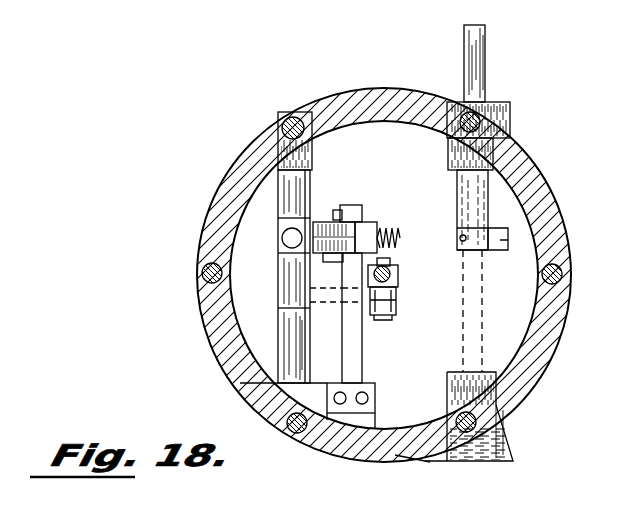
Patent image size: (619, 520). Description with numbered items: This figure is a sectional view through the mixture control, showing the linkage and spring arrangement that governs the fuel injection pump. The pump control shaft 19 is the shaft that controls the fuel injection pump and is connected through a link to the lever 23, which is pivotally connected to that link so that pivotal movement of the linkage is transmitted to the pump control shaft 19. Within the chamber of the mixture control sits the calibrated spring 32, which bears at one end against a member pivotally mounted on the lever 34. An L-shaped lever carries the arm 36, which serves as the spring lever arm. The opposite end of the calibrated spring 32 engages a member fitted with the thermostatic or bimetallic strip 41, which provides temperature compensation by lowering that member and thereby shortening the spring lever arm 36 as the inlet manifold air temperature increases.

The pump control shaft 19 is at (478, 36).
The lever 23 is at (470, 252).
The calibrated spring 32 is at (396, 226).
The lever 34 is at (495, 243).
The arm 36 is at (282, 240).
The thermostatic or bimetallic strip 41 is at (353, 340).